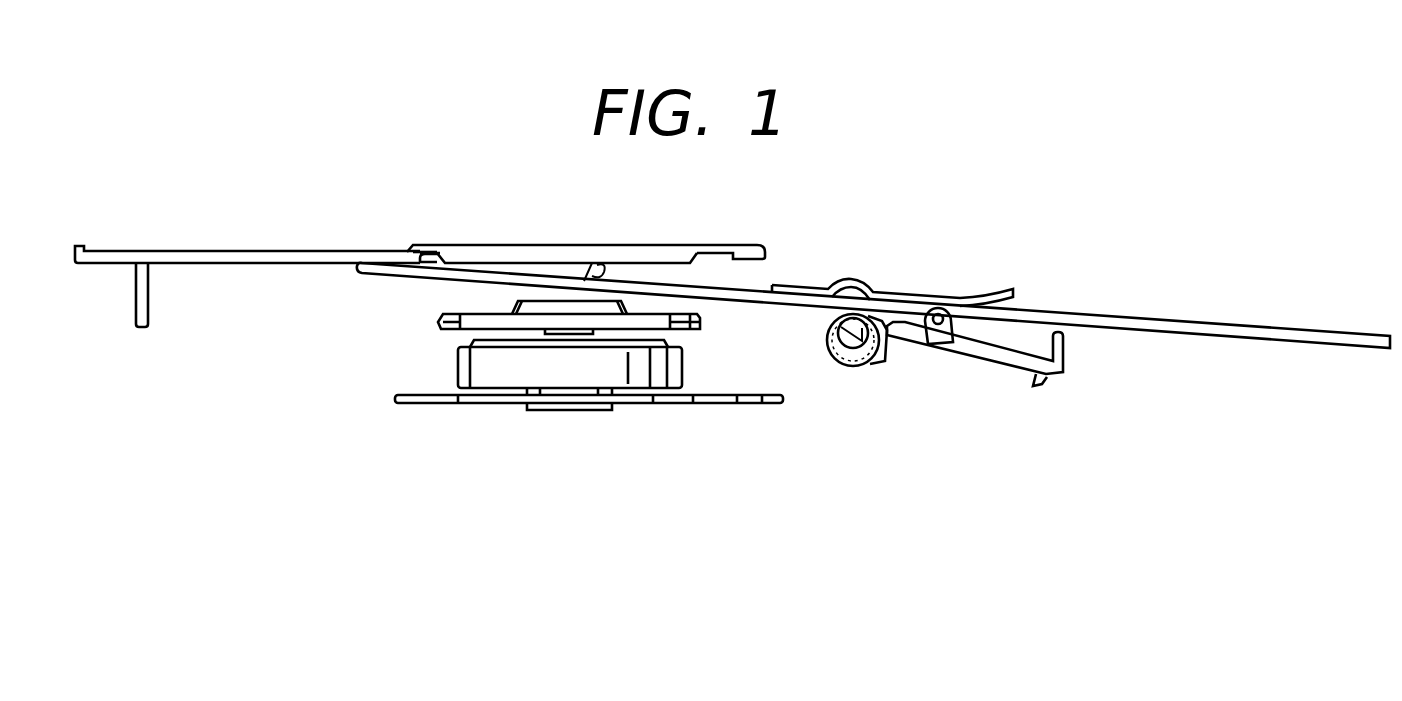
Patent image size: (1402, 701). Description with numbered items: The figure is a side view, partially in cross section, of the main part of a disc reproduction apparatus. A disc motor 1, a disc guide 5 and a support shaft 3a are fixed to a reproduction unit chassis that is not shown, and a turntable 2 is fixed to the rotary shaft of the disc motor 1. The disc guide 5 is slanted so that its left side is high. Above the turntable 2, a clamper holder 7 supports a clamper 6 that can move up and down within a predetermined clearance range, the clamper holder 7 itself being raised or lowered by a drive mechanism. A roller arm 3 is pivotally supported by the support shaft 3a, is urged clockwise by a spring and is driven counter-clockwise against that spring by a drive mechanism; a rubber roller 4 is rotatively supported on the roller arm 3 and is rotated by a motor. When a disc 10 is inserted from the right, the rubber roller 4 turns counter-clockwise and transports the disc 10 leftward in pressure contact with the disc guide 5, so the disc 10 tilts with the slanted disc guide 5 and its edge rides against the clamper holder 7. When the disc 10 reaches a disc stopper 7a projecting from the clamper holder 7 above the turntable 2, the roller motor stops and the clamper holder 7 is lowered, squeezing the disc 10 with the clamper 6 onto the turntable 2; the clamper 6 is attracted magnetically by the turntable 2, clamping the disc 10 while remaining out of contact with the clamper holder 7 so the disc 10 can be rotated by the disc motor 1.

The disc motor 1 is at (458, 358).
The turntable 2 is at (436, 318).
The roller arm 3 is at (990, 370).
The support shaft 3a is at (928, 344).
The rubber roller 4 is at (828, 329).
The disc guide 5 is at (870, 283).
The clamper 6 is at (577, 245).
The clamper holder 7 is at (259, 255).
The disc stopper 7a is at (134, 312).
The disc 10 is at (1230, 332).